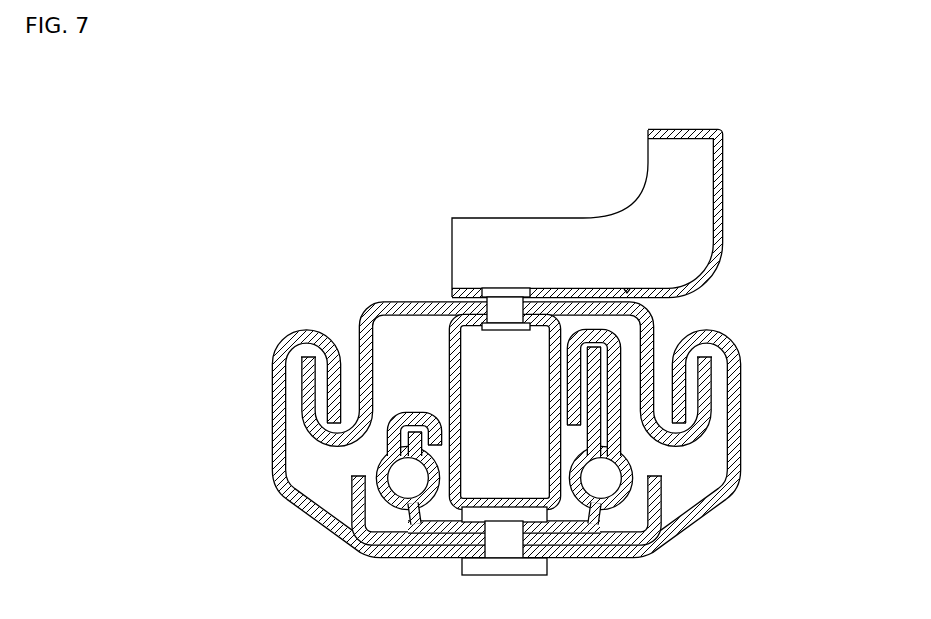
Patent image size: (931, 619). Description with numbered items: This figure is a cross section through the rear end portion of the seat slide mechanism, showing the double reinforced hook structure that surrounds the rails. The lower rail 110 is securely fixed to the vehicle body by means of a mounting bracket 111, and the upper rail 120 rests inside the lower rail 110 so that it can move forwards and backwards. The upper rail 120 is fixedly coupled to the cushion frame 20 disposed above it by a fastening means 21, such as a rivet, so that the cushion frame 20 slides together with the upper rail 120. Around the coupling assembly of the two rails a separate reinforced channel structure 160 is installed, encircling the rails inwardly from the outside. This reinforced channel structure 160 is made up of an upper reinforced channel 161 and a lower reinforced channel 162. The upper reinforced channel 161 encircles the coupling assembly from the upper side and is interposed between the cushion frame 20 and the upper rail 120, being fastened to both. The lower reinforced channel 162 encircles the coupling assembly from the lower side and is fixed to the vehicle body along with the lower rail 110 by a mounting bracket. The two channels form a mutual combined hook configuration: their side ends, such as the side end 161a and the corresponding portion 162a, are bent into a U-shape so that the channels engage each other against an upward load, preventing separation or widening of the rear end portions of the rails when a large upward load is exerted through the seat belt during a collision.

The cushion frame 20 is at (720, 200).
The fastening means 21 is at (504, 305).
The lower rail 110 is at (608, 405).
The mounting bracket 111 is at (653, 498).
The upper rail 120 is at (452, 370).
The reinforced channel structure 160 is at (455, 367).
The upper reinforced channel 161 is at (362, 300).
The side end 161a is at (330, 449).
The lower reinforced channel 162 is at (276, 322).
The hook portion 162a is at (333, 379).